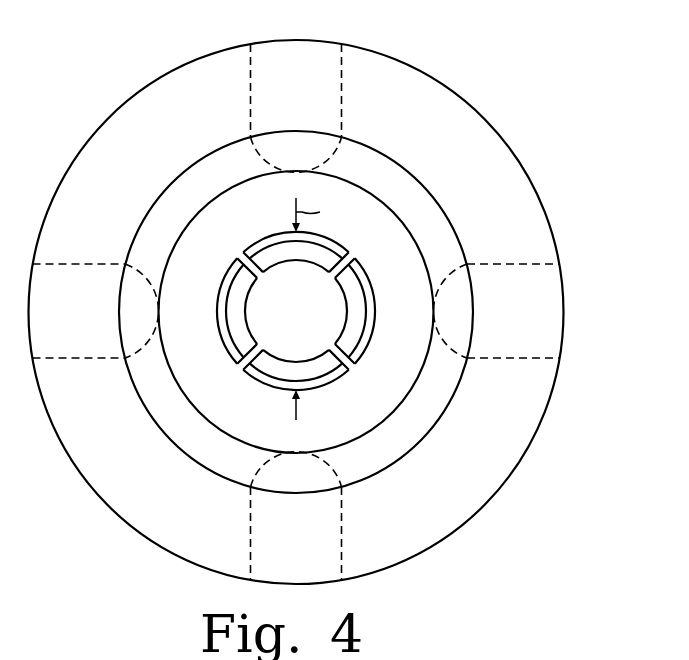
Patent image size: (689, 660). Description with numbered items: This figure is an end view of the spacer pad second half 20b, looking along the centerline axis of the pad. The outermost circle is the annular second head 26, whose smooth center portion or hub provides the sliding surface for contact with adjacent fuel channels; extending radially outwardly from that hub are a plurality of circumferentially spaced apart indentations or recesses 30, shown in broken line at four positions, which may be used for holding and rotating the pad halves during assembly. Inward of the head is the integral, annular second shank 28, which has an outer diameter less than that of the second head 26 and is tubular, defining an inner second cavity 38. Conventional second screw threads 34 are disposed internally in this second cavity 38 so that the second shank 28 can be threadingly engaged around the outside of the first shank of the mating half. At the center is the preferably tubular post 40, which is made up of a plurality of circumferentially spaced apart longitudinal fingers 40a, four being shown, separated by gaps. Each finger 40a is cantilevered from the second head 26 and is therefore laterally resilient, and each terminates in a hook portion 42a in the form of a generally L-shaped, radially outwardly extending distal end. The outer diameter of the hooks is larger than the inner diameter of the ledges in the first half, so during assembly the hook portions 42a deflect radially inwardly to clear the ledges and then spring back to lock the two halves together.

The second half 20b is at (307, 312).
The second head 26 is at (482, 500).
The second shank 28 is at (168, 438).
The recesses 30 is at (498, 262).
The second screw threads 34 is at (168, 362).
The second cavity 38 is at (285, 312).
The post 40 is at (254, 384).
The fingers 40a is at (340, 333).
The hook portion 42a is at (373, 357).